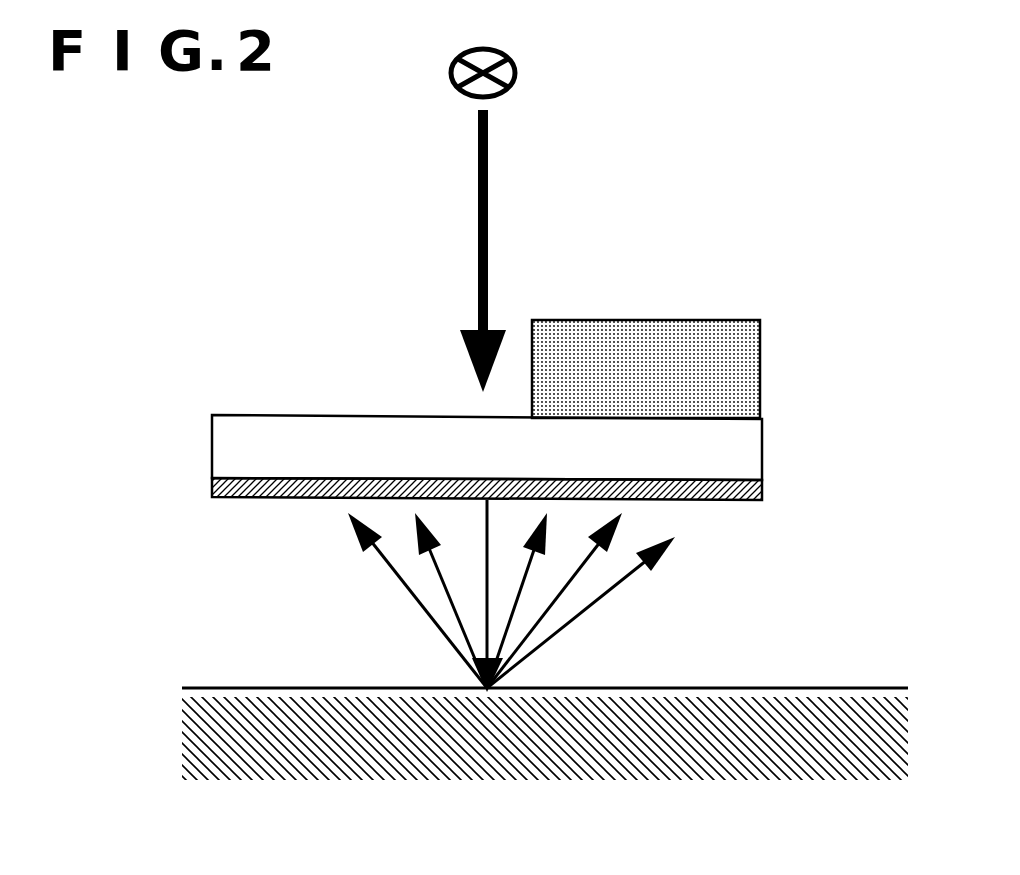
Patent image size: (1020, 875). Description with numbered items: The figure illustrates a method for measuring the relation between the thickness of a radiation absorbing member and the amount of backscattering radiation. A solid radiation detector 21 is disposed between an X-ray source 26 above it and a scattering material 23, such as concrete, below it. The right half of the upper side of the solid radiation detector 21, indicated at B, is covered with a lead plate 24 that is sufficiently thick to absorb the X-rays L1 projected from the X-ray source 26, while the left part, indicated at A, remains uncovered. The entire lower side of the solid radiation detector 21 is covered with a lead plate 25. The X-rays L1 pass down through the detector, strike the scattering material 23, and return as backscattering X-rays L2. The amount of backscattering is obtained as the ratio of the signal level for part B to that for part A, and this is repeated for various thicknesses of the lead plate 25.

The solid radiation detector 21 is at (289, 428).
The scattering material 23 is at (750, 708).
The lead plate 24 is at (728, 333).
The lead plate 25 is at (212, 488).
The X-ray source 26 is at (452, 69).
The X-rays L1 is at (489, 176).
The backscattering X-rays L2 is at (594, 606).